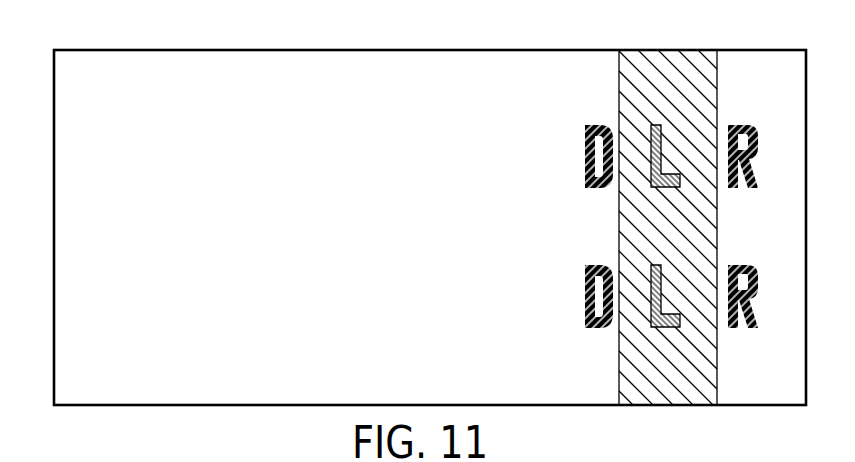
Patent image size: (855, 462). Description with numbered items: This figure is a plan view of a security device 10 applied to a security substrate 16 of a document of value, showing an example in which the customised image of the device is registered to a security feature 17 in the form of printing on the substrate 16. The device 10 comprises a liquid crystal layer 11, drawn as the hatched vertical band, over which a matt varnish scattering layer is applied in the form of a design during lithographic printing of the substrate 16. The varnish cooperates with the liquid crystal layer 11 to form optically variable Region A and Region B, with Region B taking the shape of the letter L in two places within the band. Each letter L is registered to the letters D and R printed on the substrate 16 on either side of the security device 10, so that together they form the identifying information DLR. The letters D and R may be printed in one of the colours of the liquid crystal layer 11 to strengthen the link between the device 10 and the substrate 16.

The security device 10 is at (659, 52).
The liquid crystal layer 11 is at (427, 216).
The security substrate 16 is at (94, 405).
The security feature 17 is at (586, 158).
The Region A is at (639, 227).
The Region B is at (660, 126).